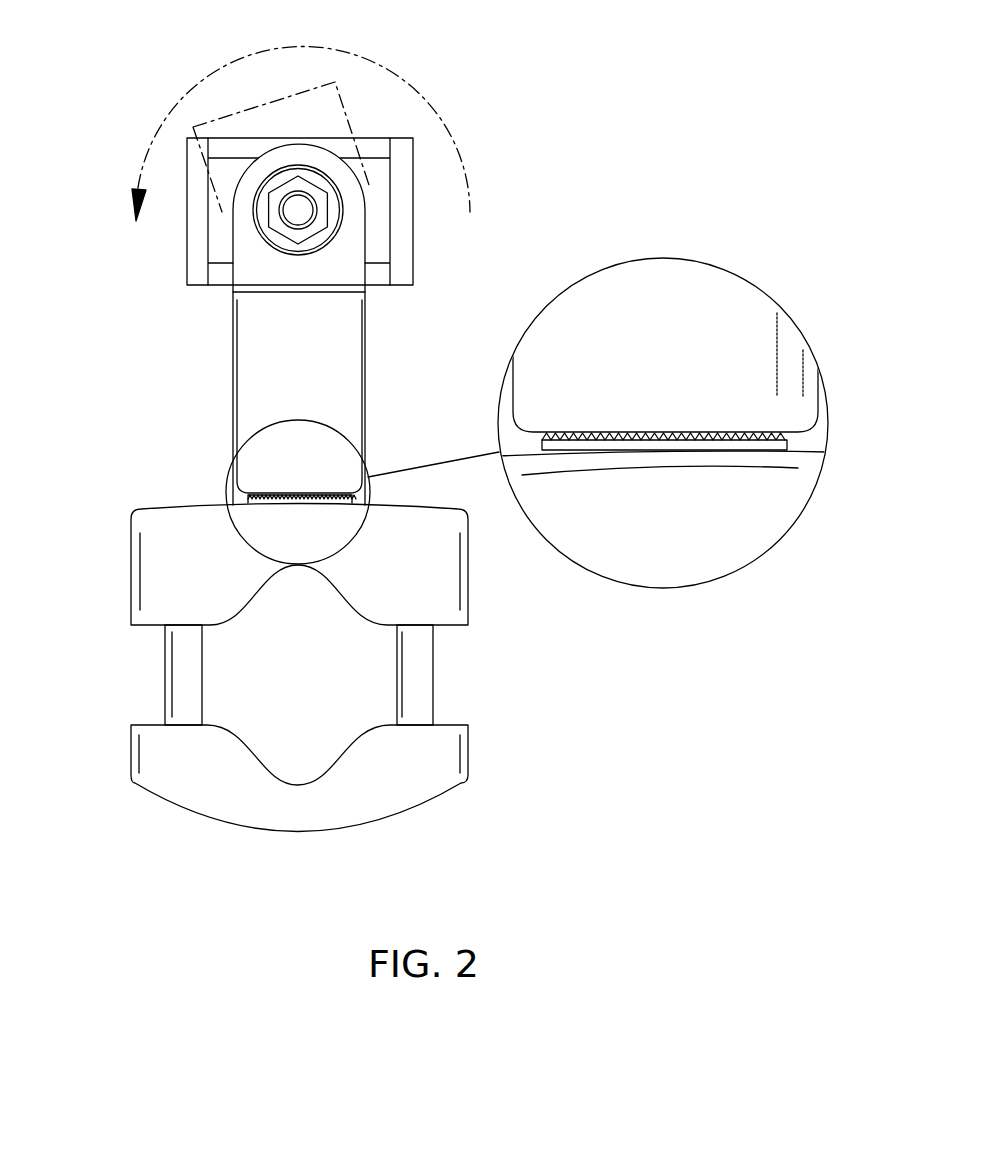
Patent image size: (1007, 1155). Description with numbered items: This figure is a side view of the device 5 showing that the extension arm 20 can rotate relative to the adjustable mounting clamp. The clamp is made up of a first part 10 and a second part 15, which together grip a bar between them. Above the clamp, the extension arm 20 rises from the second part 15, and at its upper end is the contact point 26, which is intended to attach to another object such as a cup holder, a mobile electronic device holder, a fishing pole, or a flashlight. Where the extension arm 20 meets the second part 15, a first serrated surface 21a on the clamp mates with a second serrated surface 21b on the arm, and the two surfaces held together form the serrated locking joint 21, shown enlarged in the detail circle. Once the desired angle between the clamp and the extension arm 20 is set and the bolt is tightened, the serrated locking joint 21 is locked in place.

The device 5 is at (508, 80).
The contact point 26 is at (429, 262).
The extension arm 20 is at (382, 404).
The serrated locking joint 21 is at (682, 257).
The first serrated surface 21a is at (822, 430).
The second serrated surface 21b is at (790, 447).
The second part of clamp 15 is at (128, 571).
The first part of clamp 10 is at (472, 760).